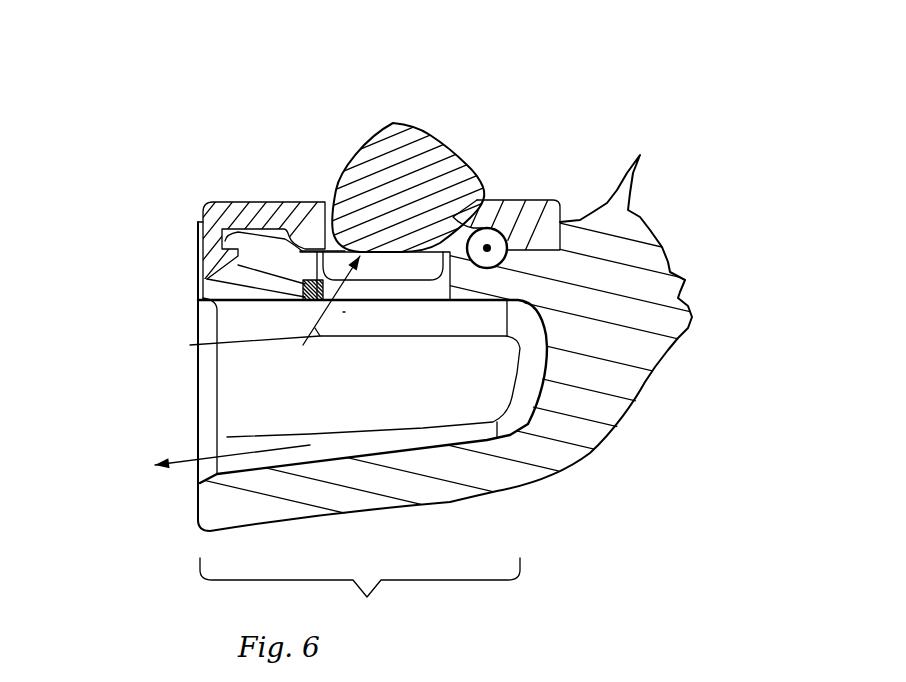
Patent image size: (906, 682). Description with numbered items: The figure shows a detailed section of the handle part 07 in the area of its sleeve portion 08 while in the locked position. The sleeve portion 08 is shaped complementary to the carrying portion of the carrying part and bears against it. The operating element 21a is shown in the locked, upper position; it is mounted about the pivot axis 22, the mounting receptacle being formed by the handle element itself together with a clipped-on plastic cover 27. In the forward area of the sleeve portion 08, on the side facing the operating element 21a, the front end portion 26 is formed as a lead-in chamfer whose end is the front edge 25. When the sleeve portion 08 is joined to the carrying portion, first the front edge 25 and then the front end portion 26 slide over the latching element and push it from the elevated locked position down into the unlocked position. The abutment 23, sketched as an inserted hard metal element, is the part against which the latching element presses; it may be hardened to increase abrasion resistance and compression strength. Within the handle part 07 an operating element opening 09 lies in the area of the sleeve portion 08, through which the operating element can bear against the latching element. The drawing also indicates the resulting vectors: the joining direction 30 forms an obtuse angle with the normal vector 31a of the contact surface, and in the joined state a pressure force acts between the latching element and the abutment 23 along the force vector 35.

The handle part 07 is at (146, 60).
The sleeve portion 08 is at (360, 597).
The operating element opening 09 is at (403, 290).
The operating element 21a is at (387, 157).
The pivot axis 22 is at (535, 187).
The abutment 23 is at (323, 302).
The front edge 25 is at (197, 275).
The front end portion 26 is at (197, 303).
The plastic cover 27 is at (262, 212).
The joining direction 30 is at (190, 470).
The normal vector 31a is at (315, 328).
The force vector 35 is at (343, 308).